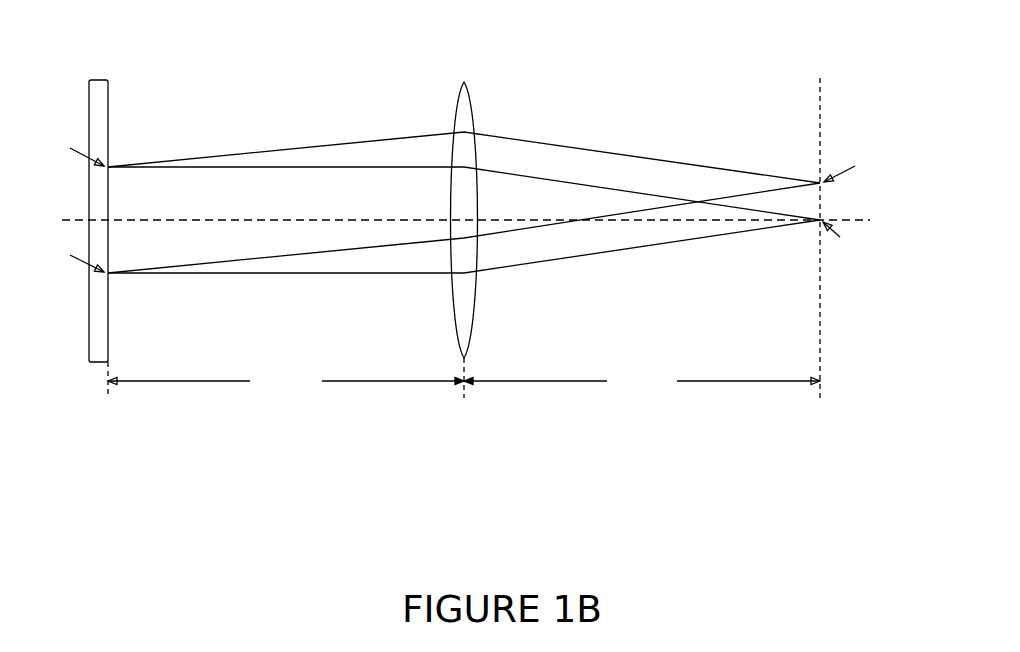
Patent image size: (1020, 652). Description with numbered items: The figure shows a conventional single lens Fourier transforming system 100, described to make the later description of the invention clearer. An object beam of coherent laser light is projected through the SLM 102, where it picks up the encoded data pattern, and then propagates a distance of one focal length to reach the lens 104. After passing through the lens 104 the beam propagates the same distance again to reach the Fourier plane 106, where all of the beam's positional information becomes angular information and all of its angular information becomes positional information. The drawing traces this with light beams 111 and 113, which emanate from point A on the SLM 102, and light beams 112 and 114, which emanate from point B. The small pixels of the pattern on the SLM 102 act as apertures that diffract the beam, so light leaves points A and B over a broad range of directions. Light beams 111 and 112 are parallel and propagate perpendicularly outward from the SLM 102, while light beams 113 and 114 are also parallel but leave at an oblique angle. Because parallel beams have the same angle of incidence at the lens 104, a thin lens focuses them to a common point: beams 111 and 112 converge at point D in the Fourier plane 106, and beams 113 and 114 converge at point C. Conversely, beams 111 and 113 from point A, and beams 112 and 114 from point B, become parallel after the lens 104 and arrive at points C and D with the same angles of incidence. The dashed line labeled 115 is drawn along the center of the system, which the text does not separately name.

The single lens Fourier transforming system 100 is at (160, 488).
The SLM 102 is at (98, 79).
The lens 104 is at (464, 81).
The Fourier plane 106 is at (820, 78).
The light beam 111 is at (213, 169).
The light beam 112 is at (322, 275).
The light beam 113 is at (285, 148).
The light beam 114 is at (194, 262).
The optical axis 115 is at (873, 222).